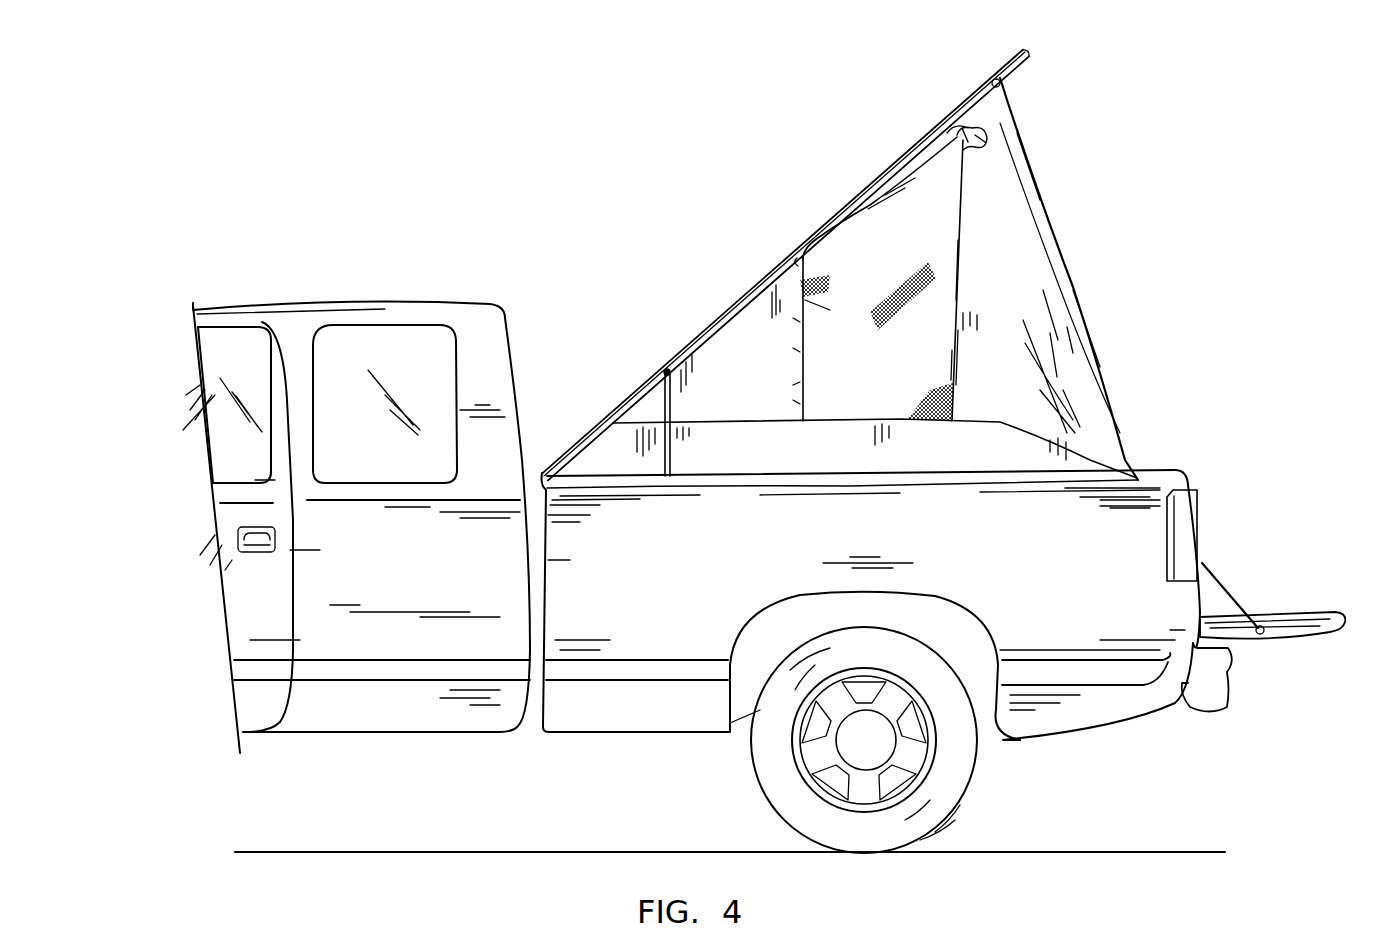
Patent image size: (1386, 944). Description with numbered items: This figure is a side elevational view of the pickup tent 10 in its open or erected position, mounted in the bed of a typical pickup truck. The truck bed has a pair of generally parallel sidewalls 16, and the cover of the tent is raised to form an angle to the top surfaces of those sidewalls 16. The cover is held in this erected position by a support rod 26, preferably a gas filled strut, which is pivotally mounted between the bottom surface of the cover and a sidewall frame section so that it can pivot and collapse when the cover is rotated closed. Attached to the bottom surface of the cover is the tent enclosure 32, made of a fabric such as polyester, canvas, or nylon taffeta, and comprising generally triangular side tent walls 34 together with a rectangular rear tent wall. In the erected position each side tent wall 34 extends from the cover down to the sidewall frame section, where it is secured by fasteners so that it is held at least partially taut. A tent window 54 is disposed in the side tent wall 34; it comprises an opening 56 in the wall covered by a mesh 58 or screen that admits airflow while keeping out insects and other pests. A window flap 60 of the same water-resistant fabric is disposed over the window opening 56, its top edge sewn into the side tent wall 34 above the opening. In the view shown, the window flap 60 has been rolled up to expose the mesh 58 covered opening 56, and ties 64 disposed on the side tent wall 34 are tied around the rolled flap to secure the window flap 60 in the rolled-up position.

The pickup tent 10 is at (685, 283).
The sidewall 16 is at (664, 616).
The support rod 26 is at (665, 447).
The tent enclosure 32 is at (1005, 257).
The side tent wall 34 is at (725, 363).
The tent window 54 is at (865, 267).
The opening 56 is at (822, 368).
The mesh 58 is at (750, 307).
The window flap 60 is at (923, 160).
The tie 64 is at (963, 130).